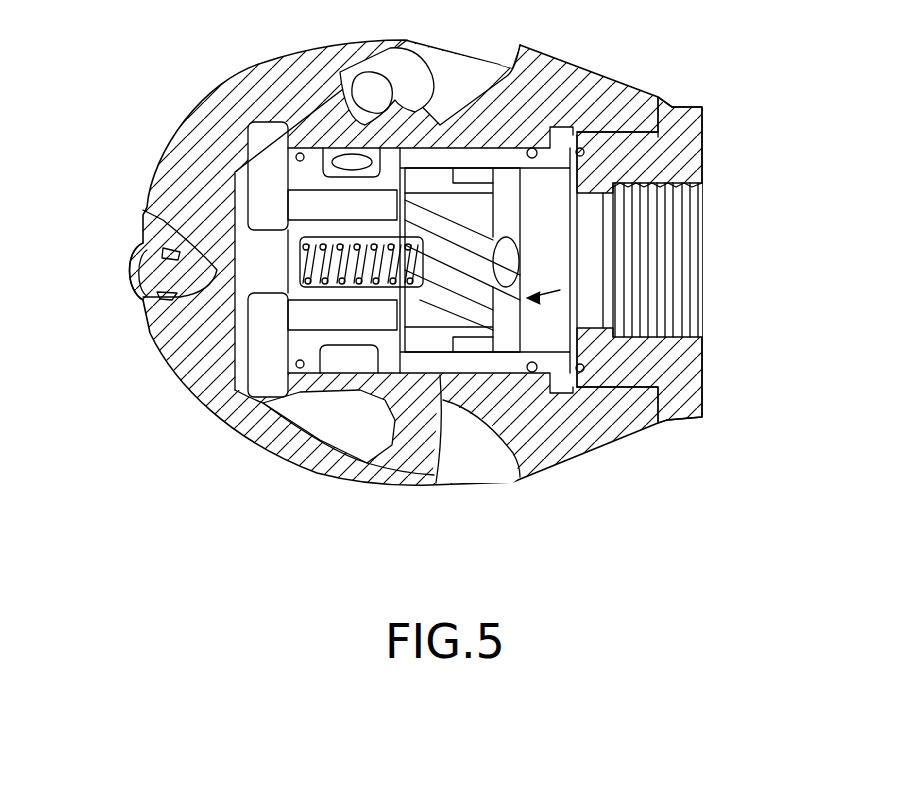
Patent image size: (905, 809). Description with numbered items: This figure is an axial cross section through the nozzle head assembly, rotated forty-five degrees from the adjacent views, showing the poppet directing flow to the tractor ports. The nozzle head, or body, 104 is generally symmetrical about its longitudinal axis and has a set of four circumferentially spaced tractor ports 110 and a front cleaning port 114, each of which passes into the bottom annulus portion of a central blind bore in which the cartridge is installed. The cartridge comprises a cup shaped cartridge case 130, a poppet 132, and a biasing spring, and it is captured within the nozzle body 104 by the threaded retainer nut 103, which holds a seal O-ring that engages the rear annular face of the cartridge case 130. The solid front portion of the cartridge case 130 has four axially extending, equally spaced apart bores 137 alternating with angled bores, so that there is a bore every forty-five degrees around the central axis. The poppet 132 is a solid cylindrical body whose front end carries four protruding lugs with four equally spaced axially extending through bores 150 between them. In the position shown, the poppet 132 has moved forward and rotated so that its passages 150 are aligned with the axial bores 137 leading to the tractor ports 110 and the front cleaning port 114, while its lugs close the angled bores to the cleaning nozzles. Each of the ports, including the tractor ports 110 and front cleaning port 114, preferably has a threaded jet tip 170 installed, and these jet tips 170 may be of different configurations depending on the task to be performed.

The tractor ports 110 is at (453, 100).
The threaded retainer nut 103 is at (700, 105).
The nozzle head 104 is at (620, 436).
The front cleaning port 114 is at (147, 228).
The threaded jet tip 170 is at (140, 287).
The poppet 132 is at (527, 298).
The axially extending bores 137 is at (332, 320).
The axially extending through bores 150 is at (433, 318).
The cartridge case 130 is at (501, 372).